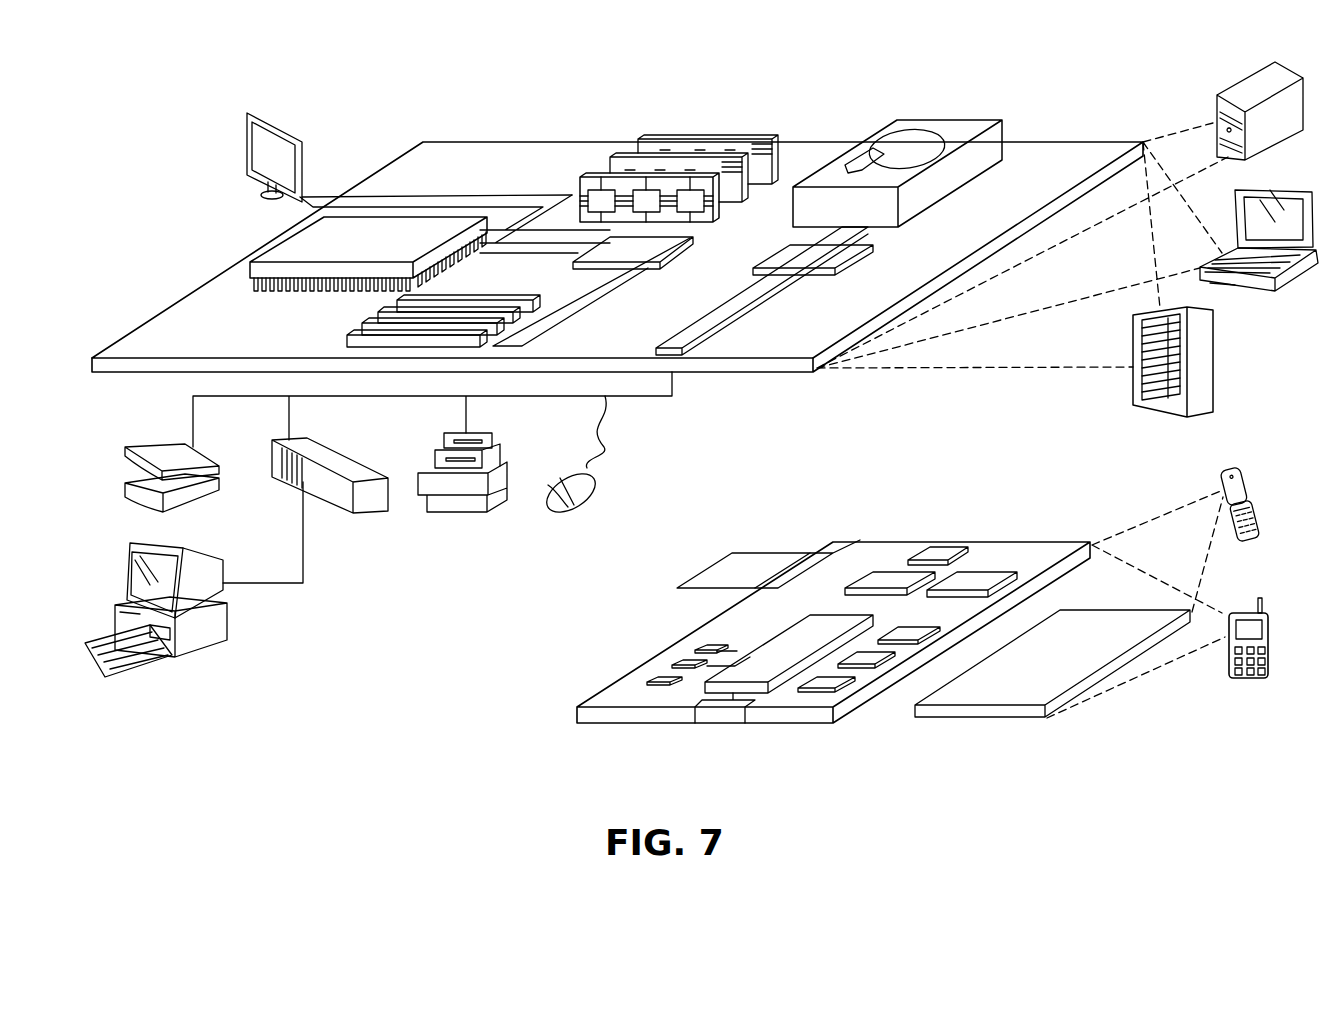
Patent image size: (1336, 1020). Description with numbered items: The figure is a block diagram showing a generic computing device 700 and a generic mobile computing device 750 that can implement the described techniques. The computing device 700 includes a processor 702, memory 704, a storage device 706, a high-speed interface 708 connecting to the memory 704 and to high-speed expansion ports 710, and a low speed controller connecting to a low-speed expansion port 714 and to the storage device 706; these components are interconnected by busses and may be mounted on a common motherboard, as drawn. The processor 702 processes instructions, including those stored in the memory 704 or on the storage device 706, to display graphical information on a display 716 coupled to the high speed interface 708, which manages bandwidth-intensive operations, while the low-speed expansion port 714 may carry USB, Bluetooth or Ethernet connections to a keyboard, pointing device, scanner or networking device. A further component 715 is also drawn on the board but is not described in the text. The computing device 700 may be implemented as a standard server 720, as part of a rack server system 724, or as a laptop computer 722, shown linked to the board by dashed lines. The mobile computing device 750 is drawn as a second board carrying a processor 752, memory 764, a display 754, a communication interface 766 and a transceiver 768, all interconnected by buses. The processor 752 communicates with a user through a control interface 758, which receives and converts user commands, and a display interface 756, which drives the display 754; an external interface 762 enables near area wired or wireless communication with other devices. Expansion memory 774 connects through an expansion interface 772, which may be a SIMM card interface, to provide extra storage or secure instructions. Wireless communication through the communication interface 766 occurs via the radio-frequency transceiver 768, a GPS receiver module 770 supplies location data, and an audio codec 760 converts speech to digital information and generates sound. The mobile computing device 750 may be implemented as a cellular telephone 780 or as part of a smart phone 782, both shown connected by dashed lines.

The computing device 700 is at (378, 92).
The processor 702 is at (278, 245).
The memory 704 is at (712, 136).
The storage device 706 is at (938, 118).
The high-speed interface 708 is at (655, 250).
The high-speed expansion ports 710 is at (372, 320).
The low-speed expansion port 714 is at (675, 344).
The controller chip 715 is at (790, 254).
The display 716 is at (254, 112).
The standard server 720 is at (1238, 88).
The laptop computer 722 is at (1292, 188).
The rack server system 724 is at (1213, 360).
The mobile computing device 750 is at (533, 732).
The processor 752 is at (757, 662).
The display 754 is at (1095, 620).
The display interface 756 is at (832, 683).
The control interface 758 is at (871, 657).
The audio codec 760 is at (907, 630).
The external interface 762 is at (722, 709).
The memory 764 is at (680, 662).
The communication interface 766 is at (890, 573).
The transceiver 768 is at (980, 574).
The GPS receiver module 770 is at (940, 552).
The expansion interface 772 is at (816, 553).
The expansion memory 774 is at (735, 553).
The cellular telephone 780 is at (1234, 467).
The smart phone 782 is at (1247, 610).